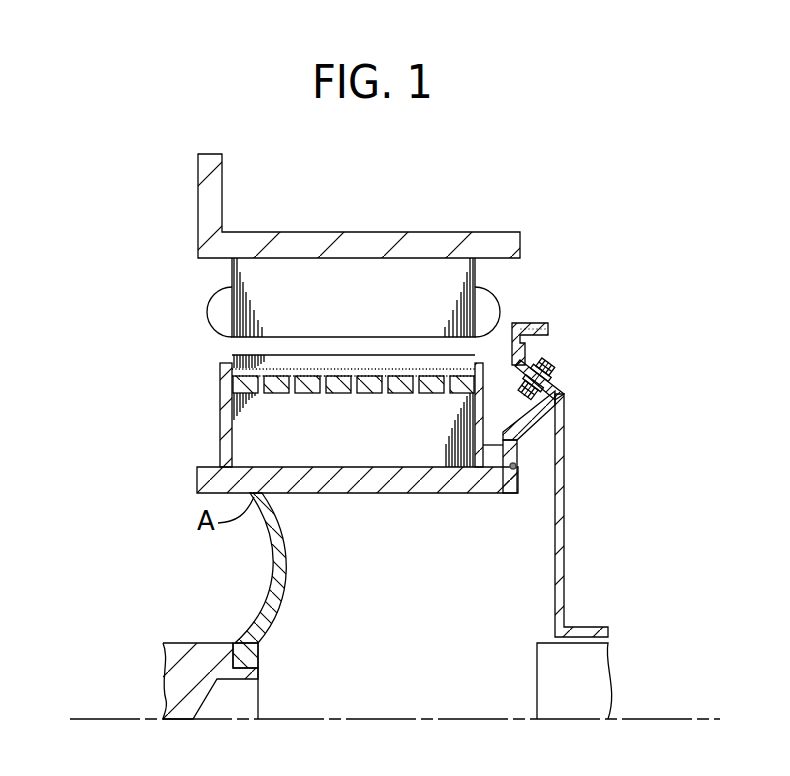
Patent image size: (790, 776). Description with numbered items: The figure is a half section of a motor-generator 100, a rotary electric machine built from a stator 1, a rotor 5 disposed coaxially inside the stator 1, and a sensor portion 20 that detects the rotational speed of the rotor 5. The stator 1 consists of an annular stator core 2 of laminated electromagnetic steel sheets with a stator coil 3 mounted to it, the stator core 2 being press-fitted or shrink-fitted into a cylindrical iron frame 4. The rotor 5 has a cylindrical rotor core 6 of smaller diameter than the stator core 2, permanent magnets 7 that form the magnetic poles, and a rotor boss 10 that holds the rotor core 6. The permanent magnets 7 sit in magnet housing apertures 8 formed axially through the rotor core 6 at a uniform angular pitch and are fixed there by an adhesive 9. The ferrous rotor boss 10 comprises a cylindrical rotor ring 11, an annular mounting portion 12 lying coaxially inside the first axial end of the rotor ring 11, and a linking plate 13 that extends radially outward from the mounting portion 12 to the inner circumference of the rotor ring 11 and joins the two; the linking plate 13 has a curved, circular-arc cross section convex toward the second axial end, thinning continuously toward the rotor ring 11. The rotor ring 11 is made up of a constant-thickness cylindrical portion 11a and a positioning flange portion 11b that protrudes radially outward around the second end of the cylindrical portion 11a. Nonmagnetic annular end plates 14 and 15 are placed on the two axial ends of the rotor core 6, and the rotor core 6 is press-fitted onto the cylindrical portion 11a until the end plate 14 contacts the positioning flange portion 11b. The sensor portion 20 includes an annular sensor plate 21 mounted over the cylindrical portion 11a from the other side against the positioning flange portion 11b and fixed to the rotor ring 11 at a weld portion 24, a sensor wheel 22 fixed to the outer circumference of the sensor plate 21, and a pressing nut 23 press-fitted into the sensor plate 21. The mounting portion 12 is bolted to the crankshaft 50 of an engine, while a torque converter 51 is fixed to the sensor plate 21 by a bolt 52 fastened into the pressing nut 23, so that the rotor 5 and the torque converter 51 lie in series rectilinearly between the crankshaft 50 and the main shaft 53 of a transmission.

The motor-generator 100 is at (127, 171).
The stator 1 is at (490, 178).
The stator core 2 is at (425, 273).
The stator coil 3 is at (485, 298).
The iron frame 4 is at (268, 242).
The rotor 5 is at (205, 367).
The rotor core 6 is at (258, 447).
The permanent magnets 7 is at (230, 382).
The magnet housing apertures 8 is at (294, 368).
The adhesive 9 is at (458, 338).
The rotor boss 10 is at (395, 536).
The rotor ring 11 is at (320, 486).
The cylindrical portion 11a is at (446, 486).
The positioning flange portion 11b is at (497, 455).
The mounting portion 12 is at (258, 660).
The linking plate 13 is at (283, 578).
The end plate 14 is at (482, 418).
The end plate 15 is at (226, 423).
The sensor portion 20 is at (530, 352).
The sensor plate 21 is at (548, 418).
The sensor wheel 22 is at (546, 326).
The pressing nut 23 is at (558, 402).
The weld portion 24 is at (518, 467).
The crankshaft 50 is at (168, 668).
The torque converter 51 is at (563, 540).
The bolt 52 is at (548, 368).
The main shaft 53 is at (548, 686).